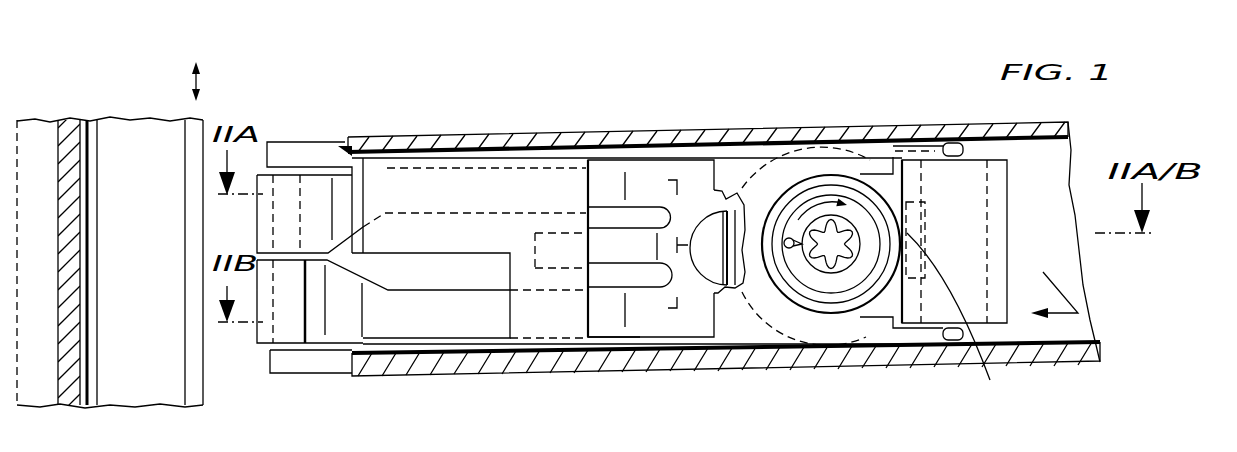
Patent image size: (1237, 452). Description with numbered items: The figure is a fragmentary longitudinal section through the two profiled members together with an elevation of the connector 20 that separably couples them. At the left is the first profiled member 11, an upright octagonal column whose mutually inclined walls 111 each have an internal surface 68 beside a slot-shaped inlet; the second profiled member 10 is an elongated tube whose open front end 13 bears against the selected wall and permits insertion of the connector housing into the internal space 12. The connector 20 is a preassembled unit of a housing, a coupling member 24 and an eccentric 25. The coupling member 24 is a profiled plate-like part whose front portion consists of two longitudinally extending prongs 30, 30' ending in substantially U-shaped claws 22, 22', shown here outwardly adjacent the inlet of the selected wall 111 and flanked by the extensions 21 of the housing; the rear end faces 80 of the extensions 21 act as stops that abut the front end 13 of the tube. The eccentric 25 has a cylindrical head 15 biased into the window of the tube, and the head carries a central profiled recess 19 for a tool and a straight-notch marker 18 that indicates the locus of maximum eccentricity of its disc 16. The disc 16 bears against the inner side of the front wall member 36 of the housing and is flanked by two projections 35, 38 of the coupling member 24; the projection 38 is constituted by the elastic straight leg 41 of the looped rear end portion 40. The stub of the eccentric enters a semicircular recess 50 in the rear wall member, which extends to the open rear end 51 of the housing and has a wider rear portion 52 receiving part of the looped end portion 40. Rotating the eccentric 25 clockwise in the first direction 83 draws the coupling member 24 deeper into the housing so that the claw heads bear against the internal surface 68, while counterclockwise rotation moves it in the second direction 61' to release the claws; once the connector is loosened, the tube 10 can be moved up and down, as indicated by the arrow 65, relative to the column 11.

The second profiled member 10 is at (572, 128).
The first profiled member 11 is at (146, 120).
The internal space 12 is at (1060, 170).
The open front end 13 is at (368, 135).
The cylindrical head 15 is at (833, 307).
The disc 16 is at (737, 237).
The marker 18 is at (792, 250).
The profiled recess 19 is at (828, 257).
The connector 20 is at (497, 195).
The extensions 21 is at (315, 137).
The claw 22 is at (321, 170).
The claw 22' is at (383, 341).
The coupling member 24 is at (696, 307).
The eccentric 25 is at (888, 307).
The prong 30 is at (651, 209).
The prong 30' is at (606, 361).
The projection 35 is at (710, 245).
The front wall member 36 is at (740, 333).
The projection 38 is at (953, 321).
The looped rear end portion 40 is at (957, 242).
The straight leg 41 is at (912, 222).
The semicircular recess 50 is at (885, 170).
The open rear end 51 is at (966, 148).
The wider rear portion 52 is at (918, 160).
The second direction arrow 61' is at (1054, 282).
The up and down movement arrow 65 is at (208, 79).
The internal surface 68 is at (186, 177).
The rear end faces 80 is at (340, 150).
The first direction arrow 83 is at (822, 205).
The walls 111 is at (194, 232).